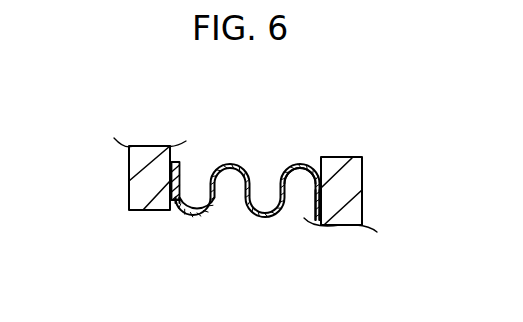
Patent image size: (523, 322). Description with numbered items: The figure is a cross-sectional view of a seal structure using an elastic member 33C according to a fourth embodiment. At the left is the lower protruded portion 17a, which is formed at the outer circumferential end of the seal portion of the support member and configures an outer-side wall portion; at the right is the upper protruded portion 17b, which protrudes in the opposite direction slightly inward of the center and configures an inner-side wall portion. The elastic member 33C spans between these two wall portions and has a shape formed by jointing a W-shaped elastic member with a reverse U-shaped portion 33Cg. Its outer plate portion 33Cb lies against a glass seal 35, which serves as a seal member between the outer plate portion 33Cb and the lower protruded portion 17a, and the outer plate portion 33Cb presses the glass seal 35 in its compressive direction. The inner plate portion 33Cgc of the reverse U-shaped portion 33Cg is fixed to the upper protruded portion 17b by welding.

The lower protruded portion 17a is at (129, 185).
The upper protruded portion 17b is at (362, 183).
The glass seal 35 is at (176, 202).
The elastic member 33C is at (237, 157).
The outer plate portion 33Cb is at (187, 168).
The reverse U-shaped portion 33Cg is at (301, 165).
The inner plate portion 33Cgc is at (313, 205).